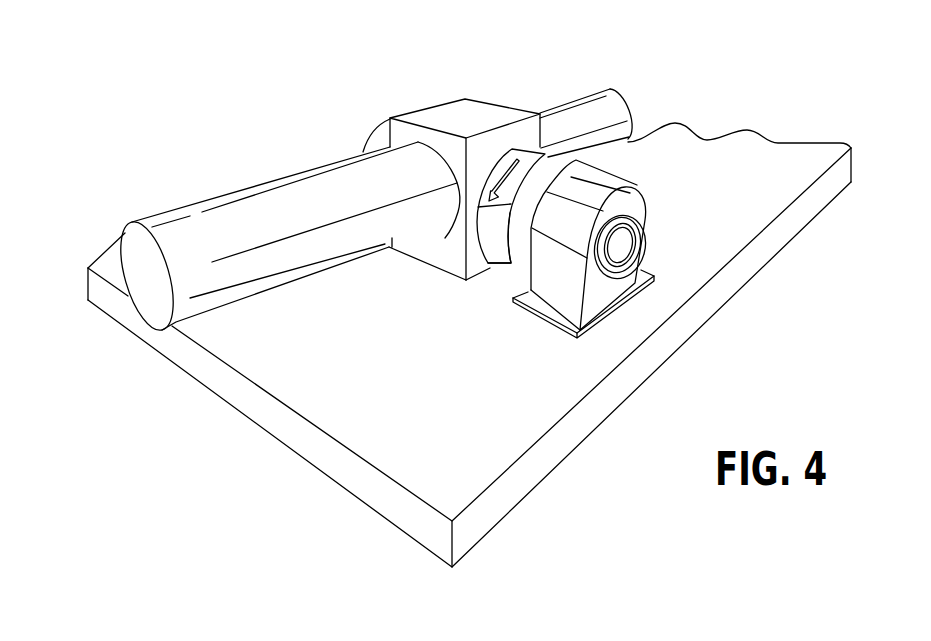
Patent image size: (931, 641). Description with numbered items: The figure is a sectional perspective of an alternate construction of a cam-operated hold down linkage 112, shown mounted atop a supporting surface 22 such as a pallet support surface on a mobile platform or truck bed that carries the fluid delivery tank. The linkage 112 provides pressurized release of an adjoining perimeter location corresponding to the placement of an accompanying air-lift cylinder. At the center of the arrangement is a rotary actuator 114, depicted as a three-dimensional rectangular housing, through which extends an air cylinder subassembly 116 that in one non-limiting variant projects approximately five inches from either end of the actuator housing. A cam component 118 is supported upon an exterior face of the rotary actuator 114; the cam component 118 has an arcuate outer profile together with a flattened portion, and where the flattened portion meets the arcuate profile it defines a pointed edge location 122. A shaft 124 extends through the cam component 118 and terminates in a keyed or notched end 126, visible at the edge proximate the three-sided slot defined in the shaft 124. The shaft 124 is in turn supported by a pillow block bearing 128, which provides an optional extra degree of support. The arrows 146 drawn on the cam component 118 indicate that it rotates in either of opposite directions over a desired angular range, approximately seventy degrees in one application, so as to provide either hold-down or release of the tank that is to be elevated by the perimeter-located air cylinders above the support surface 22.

The mounting plate 22 is at (371, 392).
The cam-operated linkage 112 is at (371, 206).
The rotary actuator 114 is at (451, 116).
The air cylinder subassembly 116 is at (228, 210).
The cam component 118 is at (490, 236).
The pointed edge location 122 is at (510, 263).
The shaft 124 is at (623, 248).
The keyed or notched end 126 is at (630, 240).
The pillow block bearing 128 is at (621, 219).
The arrows 146 is at (498, 165).